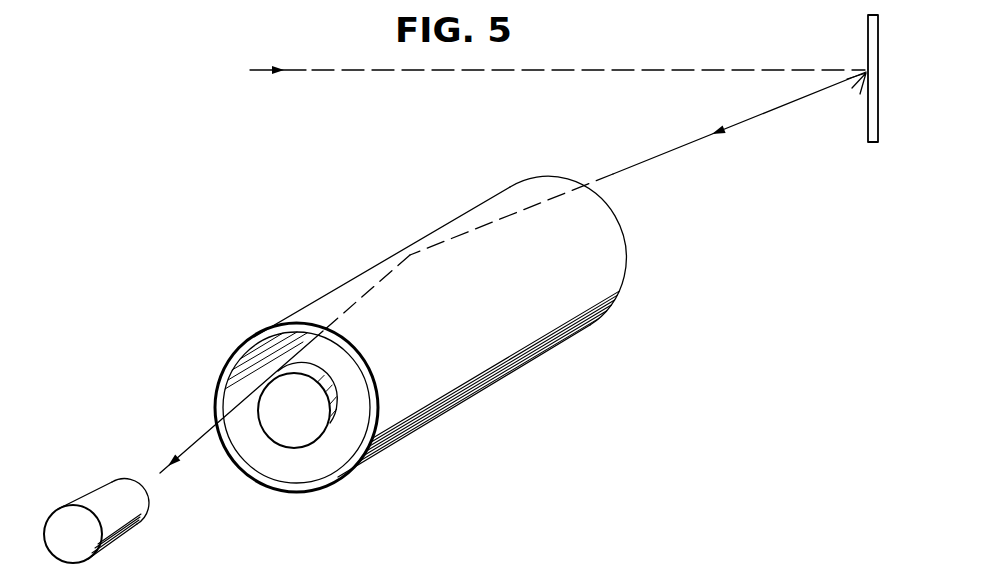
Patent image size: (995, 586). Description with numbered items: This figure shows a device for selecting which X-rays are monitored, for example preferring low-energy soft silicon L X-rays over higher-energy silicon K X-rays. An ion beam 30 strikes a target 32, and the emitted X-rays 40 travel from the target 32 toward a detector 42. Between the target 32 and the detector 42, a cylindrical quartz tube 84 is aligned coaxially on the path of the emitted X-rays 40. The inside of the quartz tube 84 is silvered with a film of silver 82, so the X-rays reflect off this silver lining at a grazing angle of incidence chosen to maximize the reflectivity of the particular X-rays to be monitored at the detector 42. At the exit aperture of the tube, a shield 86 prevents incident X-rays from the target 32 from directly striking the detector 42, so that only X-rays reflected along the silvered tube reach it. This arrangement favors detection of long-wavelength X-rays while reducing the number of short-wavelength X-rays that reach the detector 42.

The ion beam 30 is at (347, 72).
The target 32 is at (868, 40).
The emitted X-rays 40 is at (665, 150).
The detector 42 is at (100, 500).
The film of silver 82 is at (228, 390).
The cylindrical quartz tube 84 is at (336, 292).
The shield 86 is at (282, 425).